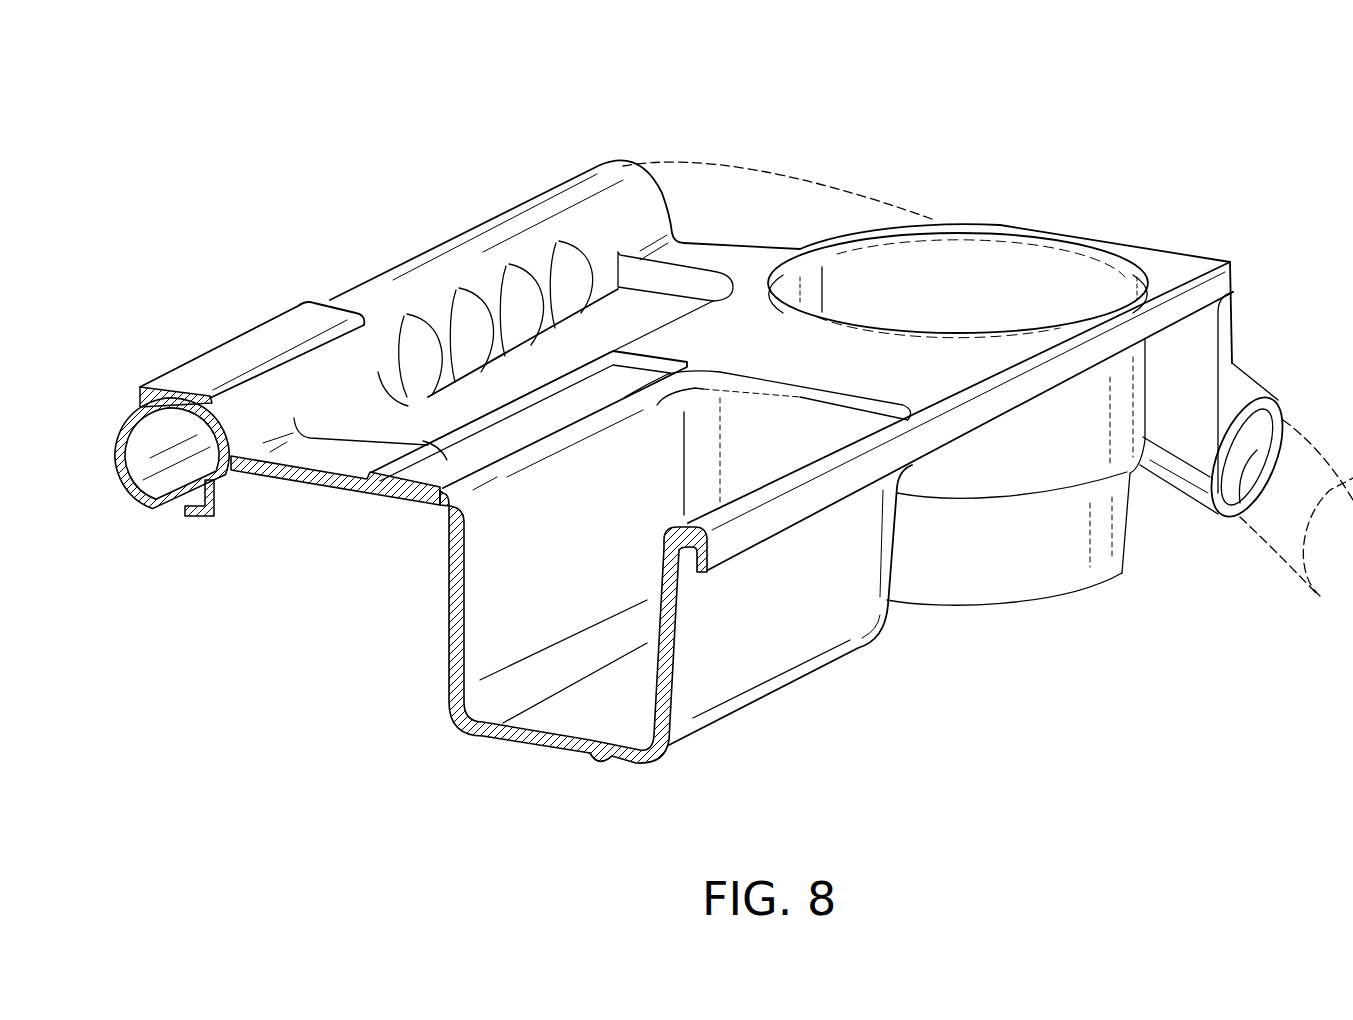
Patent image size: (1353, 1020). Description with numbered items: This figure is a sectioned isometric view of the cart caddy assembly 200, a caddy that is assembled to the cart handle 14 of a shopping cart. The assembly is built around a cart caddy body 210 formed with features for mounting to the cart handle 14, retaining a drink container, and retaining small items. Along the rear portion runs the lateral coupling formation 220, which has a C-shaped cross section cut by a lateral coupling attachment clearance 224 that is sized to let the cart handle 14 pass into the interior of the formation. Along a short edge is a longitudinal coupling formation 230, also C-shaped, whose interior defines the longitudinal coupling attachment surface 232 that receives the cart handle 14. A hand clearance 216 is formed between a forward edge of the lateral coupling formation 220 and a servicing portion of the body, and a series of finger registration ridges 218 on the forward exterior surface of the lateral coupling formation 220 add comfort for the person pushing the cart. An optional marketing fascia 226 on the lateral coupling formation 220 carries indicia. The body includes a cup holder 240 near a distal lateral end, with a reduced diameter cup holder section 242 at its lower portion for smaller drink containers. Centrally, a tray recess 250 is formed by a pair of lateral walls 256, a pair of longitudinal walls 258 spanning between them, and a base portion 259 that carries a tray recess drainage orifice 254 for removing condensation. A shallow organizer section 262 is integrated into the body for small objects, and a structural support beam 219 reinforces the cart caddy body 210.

The cart handle 14 is at (782, 172).
The cart caddy assembly 200 is at (1101, 188).
The cart caddy body 210 is at (1177, 250).
The hand clearance 216 is at (549, 350).
The finger registration ridges 218 is at (417, 390).
The structural support beam 219 is at (748, 530).
The lateral coupling formation 220 is at (115, 447).
The lateral coupling attachment clearance 224 is at (185, 510).
The marketing fascia 226 is at (243, 350).
The longitudinal coupling formation 230 is at (1257, 363).
The longitudinal coupling attachment surface 232 is at (1243, 515).
The cup holder 240 is at (948, 273).
The reduced diameter cup holder section 242 is at (1070, 560).
The tray recess 250 is at (669, 465).
The tray recess drainage orifice 254 is at (597, 758).
The lateral walls 256 is at (513, 583).
The longitudinal walls 258 is at (787, 433).
The base portion 259 is at (577, 722).
The organizer section 262 is at (377, 497).